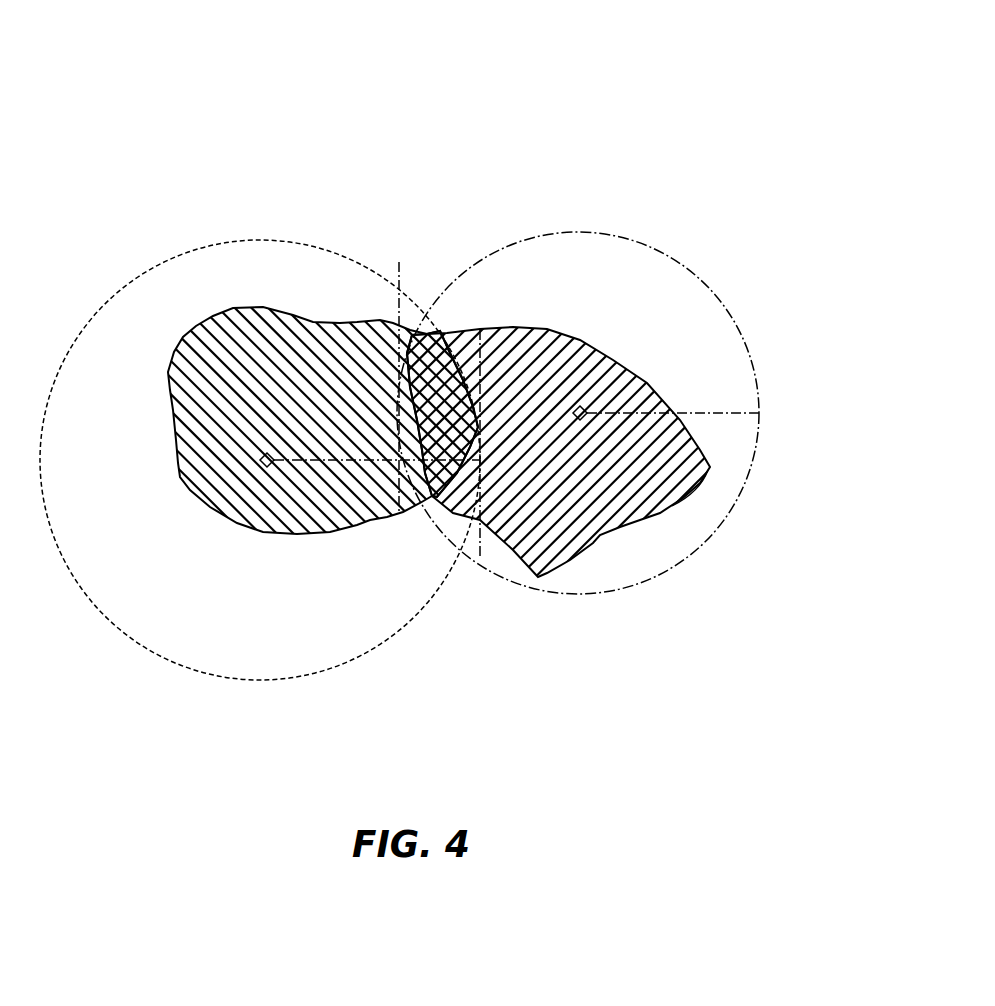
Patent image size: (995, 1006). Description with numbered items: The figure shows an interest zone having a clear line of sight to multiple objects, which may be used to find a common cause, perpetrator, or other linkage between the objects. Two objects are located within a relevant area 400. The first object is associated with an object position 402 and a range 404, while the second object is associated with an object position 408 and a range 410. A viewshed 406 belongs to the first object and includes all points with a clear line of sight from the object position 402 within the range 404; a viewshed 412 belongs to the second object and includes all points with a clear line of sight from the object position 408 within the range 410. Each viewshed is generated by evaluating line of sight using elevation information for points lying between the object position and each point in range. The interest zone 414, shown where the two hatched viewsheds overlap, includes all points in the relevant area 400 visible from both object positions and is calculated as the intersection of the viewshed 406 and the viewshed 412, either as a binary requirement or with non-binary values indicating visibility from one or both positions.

The relevant area 400 is at (696, 103).
The object position 402 is at (262, 463).
The range 404 is at (337, 460).
The viewshed 406 is at (248, 347).
The object position 408 is at (583, 405).
The range 410 is at (693, 407).
The viewshed 412 is at (620, 487).
The interest zone 414 is at (442, 333).